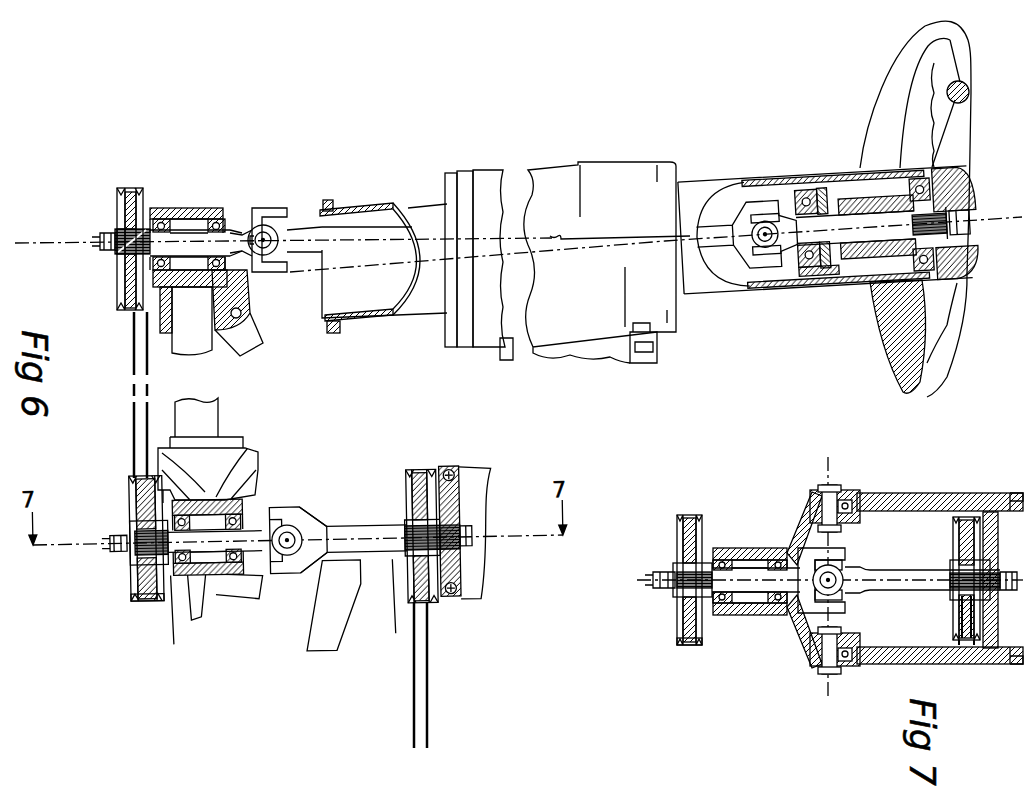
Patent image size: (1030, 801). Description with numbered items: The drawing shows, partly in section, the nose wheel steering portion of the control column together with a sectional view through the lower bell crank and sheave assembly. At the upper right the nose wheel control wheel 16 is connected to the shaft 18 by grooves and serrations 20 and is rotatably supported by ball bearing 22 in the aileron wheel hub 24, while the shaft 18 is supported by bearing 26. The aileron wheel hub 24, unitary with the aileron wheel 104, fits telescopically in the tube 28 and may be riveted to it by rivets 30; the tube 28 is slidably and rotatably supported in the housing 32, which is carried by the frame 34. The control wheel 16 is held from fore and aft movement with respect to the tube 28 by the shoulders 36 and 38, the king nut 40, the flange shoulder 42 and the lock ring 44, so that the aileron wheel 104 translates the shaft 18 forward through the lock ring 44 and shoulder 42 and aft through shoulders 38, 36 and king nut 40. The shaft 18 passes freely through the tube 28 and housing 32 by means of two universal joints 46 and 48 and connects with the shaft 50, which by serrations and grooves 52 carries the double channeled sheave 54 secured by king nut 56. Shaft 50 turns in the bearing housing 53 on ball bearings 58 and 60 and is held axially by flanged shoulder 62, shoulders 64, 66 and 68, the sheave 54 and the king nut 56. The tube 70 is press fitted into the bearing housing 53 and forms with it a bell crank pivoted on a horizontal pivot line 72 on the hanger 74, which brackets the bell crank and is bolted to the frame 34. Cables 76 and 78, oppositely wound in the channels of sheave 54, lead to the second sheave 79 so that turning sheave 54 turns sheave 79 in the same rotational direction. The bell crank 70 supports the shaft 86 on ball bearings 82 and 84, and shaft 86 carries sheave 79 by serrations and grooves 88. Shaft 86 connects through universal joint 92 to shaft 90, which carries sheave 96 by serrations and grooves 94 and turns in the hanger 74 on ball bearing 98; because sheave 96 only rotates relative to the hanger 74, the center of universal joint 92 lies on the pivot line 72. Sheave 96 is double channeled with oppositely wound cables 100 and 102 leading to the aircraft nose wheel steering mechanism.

In FIG. 6, the nose wheel control wheel 16 is at (972, 115).
In FIG. 6, the shaft 18 is at (320, 226).
In FIG. 6, the grooves and serrations 20 is at (963, 292).
In FIG. 6, the ball bearing 22 is at (953, 330).
In FIG. 6, the aileron wheel hub 24 is at (812, 283).
In FIG. 6, the bearing 26 is at (806, 197).
In FIG. 6, the tube 28 is at (737, 293).
In FIG. 6, the rivets 30 is at (848, 184).
In FIG. 6, the housing 32 is at (612, 162).
In FIG. 6, the frame 34 is at (640, 363).
In FIG. 6, the shoulder 36 is at (976, 204).
In FIG. 6, the shoulder 38 is at (908, 190).
In FIG. 6, the king nut 40 is at (962, 254).
In FIG. 6, the flange shoulder 42 is at (797, 252).
In FIG. 6, the lock ring 44 is at (850, 184).
In FIG. 6, the universal joint 46 is at (755, 206).
In FIG. 6, the universal joint 48 is at (275, 208).
In FIG. 6, the shaft 50 is at (192, 230).
In FIG. 6, the serrations and grooves 52 is at (118, 232).
In FIG. 6, the bearing housing 53 is at (165, 208).
In FIG. 6, the sheave 54 is at (128, 190).
In FIG. 6, the king nut 56 is at (100, 243).
In FIG. 6, the ball bearing 58 is at (228, 264).
In FIG. 6, the ball bearing 60 is at (166, 300).
In FIG. 6, the flanged shoulder 62 is at (236, 228).
In FIG. 6, the shoulder 64 is at (214, 305).
In FIG. 6, the shoulder 66 is at (168, 219).
In FIG. 6, the shoulder 68 is at (118, 258).
In FIG. 6, the tube 70 is at (190, 345).
In FIG. 6, the horizontal pivot line 72 is at (287, 561).
In FIG. 6, the hanger 74 is at (455, 477).
In FIG. 7, the hanger 74 is at (875, 665).
In FIG. 6, the cable 76 is at (134, 356).
In FIG. 6, the cable 78 is at (134, 396).
In FIG. 6, the second sheave 79 is at (148, 605).
In FIG. 7, the second sheave 79 is at (682, 646).
In FIG. 6, the ball bearing 82 is at (178, 580).
In FIG. 7, the ball bearing 82 is at (720, 616).
In FIG. 6, the ball bearing 84 is at (236, 580).
In FIG. 7, the ball bearing 84 is at (776, 616).
In FIG. 6, the shaft 86 is at (205, 535).
In FIG. 7, the shaft 86 is at (748, 568).
In FIG. 6, the serrations and grooves 88 is at (140, 556).
In FIG. 7, the serrations and grooves 88 is at (680, 568).
In FIG. 6, the shaft 90 is at (395, 559).
In FIG. 7, the shaft 90 is at (905, 572).
In FIG. 6, the universal joint 92 is at (303, 512).
In FIG. 7, the universal joint 92 is at (850, 556).
In FIG. 6, the serrations and grooves 94 is at (410, 527).
In FIG. 7, the serrations and grooves 94 is at (985, 597).
In FIG. 6, the sheave 96 is at (420, 500).
In FIG. 7, the sheave 96 is at (964, 522).
In FIG. 6, the ball bearing 98 is at (470, 536).
In FIG. 7, the ball bearing 98 is at (1006, 568).
In FIG. 6, the cable 100 is at (412, 730).
In FIG. 7, the cable 100 is at (962, 645).
In FIG. 6, the cable 102 is at (430, 672).
In FIG. 7, the cable 102 is at (974, 643).
In FIG. 6, the aileron wheel 104 is at (877, 85).